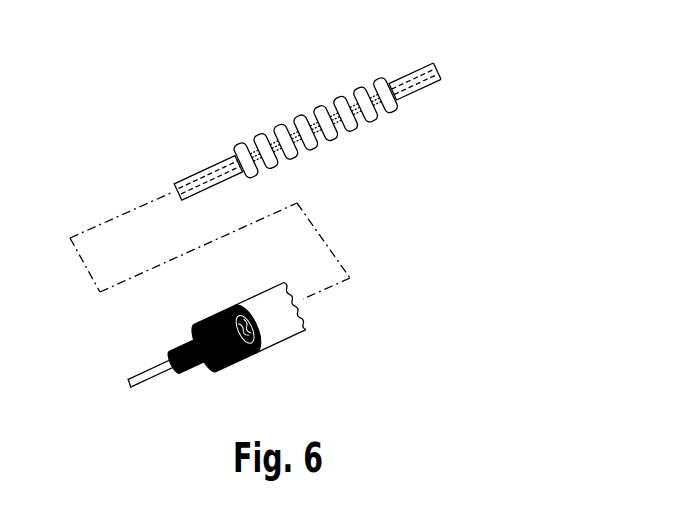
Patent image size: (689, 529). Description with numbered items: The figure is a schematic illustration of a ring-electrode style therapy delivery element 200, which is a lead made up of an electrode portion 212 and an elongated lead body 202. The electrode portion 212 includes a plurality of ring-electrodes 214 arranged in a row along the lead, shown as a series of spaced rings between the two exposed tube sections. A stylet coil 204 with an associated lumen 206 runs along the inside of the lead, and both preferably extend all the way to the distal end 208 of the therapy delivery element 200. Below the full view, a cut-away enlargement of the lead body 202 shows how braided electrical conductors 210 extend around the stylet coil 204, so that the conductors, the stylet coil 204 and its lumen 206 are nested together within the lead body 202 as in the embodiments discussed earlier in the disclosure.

The therapy delivery element 200 is at (337, 197).
The elongated lead body 202 is at (187, 180).
The stylet coil 204 is at (410, 73).
The lumen 206 is at (420, 82).
The distal end 208 is at (443, 72).
The braided electrical conductors 210 is at (227, 317).
The electrode portion 212 is at (320, 143).
The ring-electrodes 214 is at (282, 137).